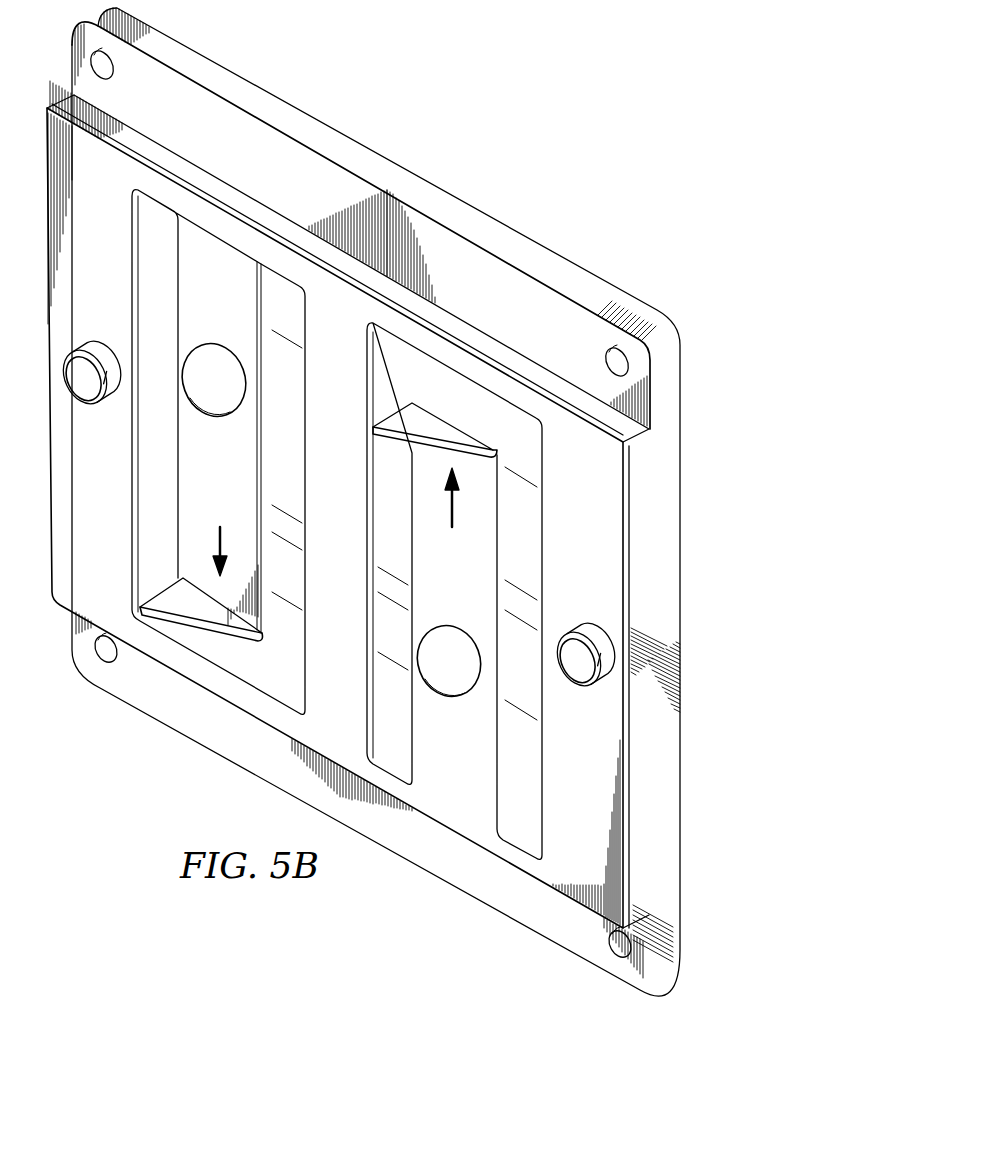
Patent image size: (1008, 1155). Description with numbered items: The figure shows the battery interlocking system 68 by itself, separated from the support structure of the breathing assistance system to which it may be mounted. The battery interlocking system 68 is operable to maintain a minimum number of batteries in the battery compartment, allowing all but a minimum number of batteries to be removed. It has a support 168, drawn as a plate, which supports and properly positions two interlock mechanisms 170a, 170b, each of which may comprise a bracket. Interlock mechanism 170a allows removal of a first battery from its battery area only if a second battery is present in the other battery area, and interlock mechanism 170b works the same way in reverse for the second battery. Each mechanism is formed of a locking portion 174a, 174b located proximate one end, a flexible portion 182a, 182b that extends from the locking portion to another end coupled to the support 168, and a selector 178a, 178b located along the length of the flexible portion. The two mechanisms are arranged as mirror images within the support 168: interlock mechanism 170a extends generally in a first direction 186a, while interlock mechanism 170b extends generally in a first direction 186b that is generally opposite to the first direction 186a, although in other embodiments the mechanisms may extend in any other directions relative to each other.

The battery interlocking system 68 is at (714, 467).
The support 168 is at (597, 507).
The interlock mechanism 170a is at (196, 684).
The interlock mechanism 170b is at (500, 431).
The locking portion 174a is at (168, 592).
The locking portion 174b is at (422, 420).
The selector 178a is at (207, 360).
The selector 178b is at (466, 694).
The flexible portion 182a is at (195, 448).
The flexible portion 182b is at (473, 594).
The first direction 186a is at (210, 530).
The first direction 186b is at (463, 513).